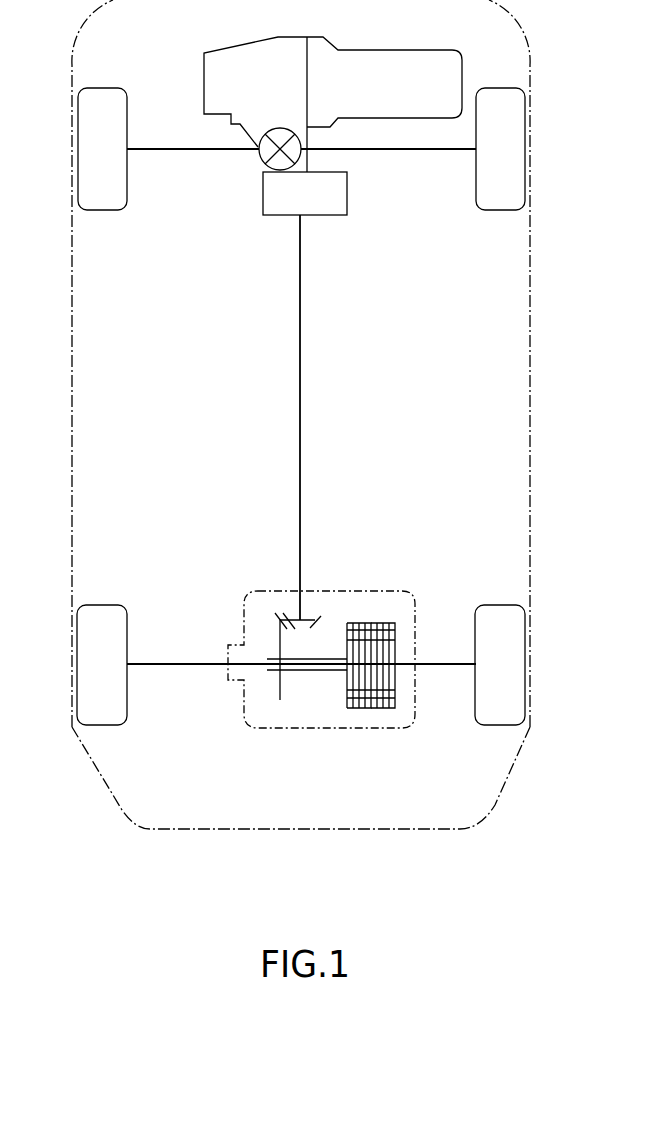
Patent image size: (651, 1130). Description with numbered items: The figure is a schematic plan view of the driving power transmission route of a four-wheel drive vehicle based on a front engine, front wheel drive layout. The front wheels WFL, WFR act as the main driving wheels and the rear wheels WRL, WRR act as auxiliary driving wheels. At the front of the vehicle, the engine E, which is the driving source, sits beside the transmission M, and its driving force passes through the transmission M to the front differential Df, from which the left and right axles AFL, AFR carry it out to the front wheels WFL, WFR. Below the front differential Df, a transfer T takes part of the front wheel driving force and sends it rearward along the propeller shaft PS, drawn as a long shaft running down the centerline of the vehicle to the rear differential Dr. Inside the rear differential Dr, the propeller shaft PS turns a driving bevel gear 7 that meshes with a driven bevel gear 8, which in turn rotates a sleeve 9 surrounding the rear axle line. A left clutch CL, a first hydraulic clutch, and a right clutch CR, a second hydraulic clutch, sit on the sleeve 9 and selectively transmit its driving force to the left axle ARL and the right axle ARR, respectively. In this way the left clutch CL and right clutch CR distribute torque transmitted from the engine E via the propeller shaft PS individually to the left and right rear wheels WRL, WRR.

The front left wheel WFL is at (127, 200).
The front right wheel WFR is at (476, 188).
The rear left wheel WRL is at (127, 715).
The rear right wheel WRR is at (475, 715).
The left front axle AFL is at (168, 150).
The right front axle AFR is at (397, 150).
The left rear axle ARL is at (176, 662).
The right rear axle ARR is at (440, 662).
The transmission M is at (255, 92).
The engine E is at (384, 104).
The transfer T is at (305, 193).
The front differential Df is at (258, 160).
The propeller shaft PS is at (300, 393).
The rear differential Dr is at (268, 591).
The driving bevel gear 7 is at (323, 617).
The driven bevel gear 8 is at (282, 705).
The sleeve 9 is at (305, 672).
The left clutch CL is at (357, 712).
The right clutch CR is at (383, 712).